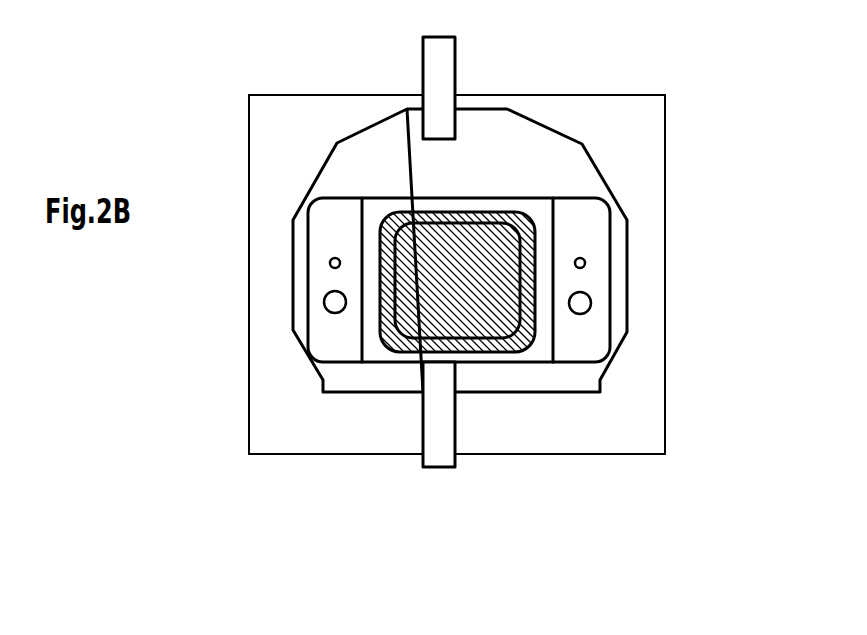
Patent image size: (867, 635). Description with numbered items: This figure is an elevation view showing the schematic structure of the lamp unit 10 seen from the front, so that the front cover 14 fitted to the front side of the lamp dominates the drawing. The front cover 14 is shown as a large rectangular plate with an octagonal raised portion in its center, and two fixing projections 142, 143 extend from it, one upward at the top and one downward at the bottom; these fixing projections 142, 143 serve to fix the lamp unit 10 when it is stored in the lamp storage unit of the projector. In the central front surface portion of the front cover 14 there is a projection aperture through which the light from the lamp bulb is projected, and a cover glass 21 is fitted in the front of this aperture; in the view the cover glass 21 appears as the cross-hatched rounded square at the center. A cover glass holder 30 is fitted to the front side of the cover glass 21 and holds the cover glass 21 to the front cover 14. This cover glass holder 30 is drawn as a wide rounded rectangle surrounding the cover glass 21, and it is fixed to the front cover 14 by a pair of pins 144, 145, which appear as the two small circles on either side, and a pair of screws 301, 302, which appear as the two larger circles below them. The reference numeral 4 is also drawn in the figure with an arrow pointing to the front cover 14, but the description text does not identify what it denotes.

The lamp unit 10 is at (710, 74).
The base plate 4 is at (639, 380).
The front cover 14 is at (612, 182).
The cover glass holder 30 is at (524, 188).
The cover glass 21 is at (485, 237).
The fixing projection 142 is at (423, 79).
The fixing projection 143 is at (455, 427).
The pin 144 is at (330, 262).
The pin 145 is at (586, 262).
The screw 301 is at (324, 302).
The screw 302 is at (592, 302).